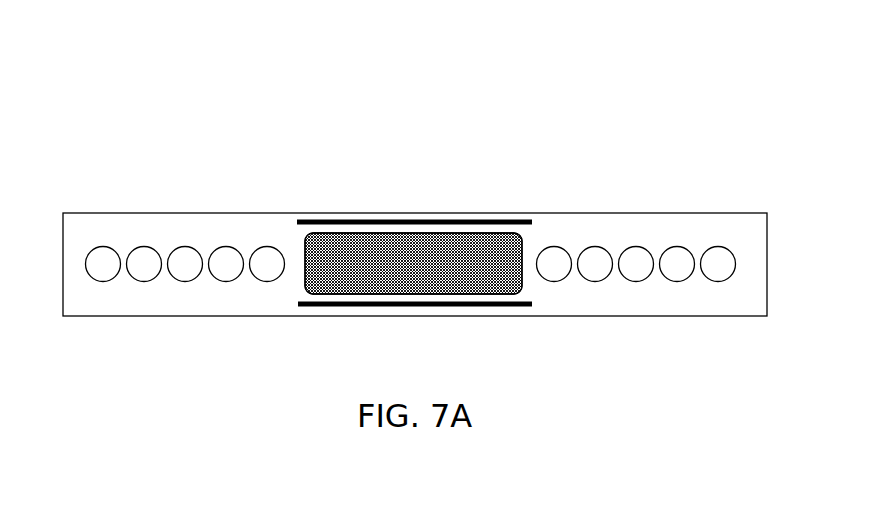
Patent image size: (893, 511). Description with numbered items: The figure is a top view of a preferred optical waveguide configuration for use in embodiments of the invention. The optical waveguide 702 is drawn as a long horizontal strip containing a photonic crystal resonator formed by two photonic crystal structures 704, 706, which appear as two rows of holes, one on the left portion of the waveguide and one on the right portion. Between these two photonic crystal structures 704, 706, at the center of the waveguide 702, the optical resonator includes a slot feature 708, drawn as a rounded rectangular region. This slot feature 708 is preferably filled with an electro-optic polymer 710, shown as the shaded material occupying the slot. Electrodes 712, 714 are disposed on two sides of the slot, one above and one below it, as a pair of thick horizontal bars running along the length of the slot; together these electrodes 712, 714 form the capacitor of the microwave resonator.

The optical waveguide 702 is at (132, 316).
The photonic crystal structure 704 is at (155, 233).
The photonic crystal structure 706 is at (661, 232).
The slot feature 708 is at (522, 287).
The electro-optic polymer 710 is at (403, 242).
The electrode 712 is at (325, 220).
The electrode 714 is at (340, 306).